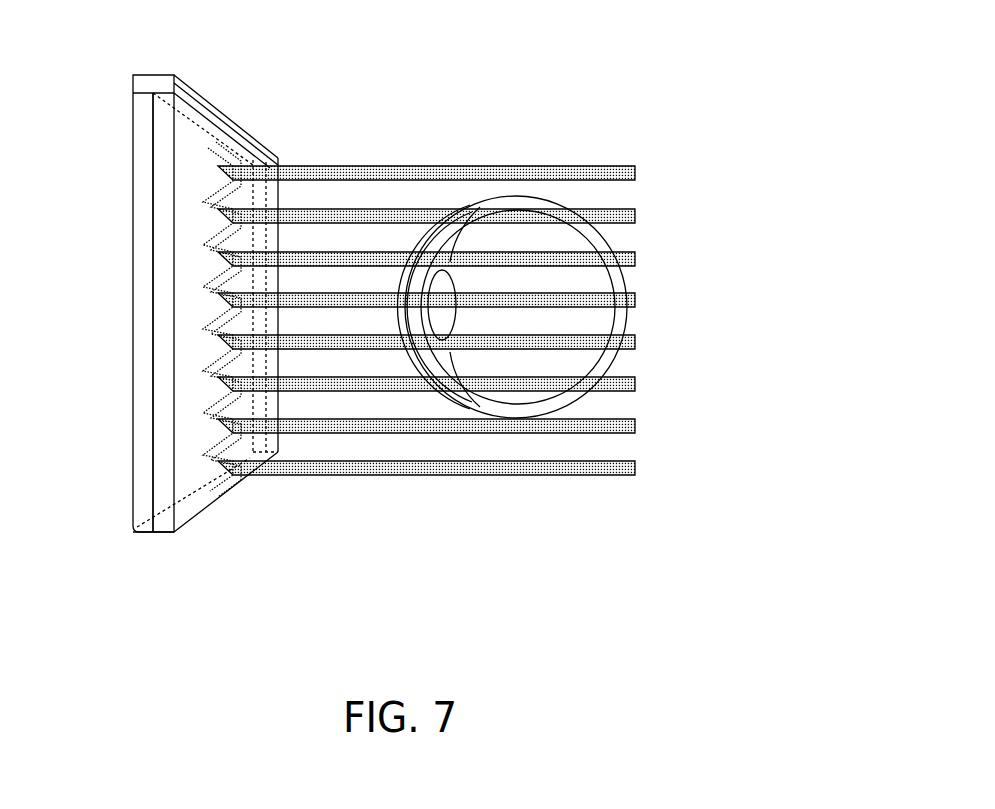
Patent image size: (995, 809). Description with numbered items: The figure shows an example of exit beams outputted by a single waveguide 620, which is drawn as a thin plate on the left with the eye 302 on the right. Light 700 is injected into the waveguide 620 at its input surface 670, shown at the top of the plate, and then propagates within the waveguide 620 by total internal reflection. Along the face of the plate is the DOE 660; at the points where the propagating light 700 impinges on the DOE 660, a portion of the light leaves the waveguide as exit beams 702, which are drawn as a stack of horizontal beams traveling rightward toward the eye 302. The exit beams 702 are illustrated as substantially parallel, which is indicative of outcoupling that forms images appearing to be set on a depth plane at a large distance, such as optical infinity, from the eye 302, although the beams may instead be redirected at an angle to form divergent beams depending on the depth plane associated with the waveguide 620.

The input surface 670 is at (140, 78).
The light 700 is at (222, 125).
The exit beams 702 is at (364, 164).
The eye 302 is at (522, 197).
The DOE 660 is at (153, 422).
The waveguide 620 is at (172, 541).